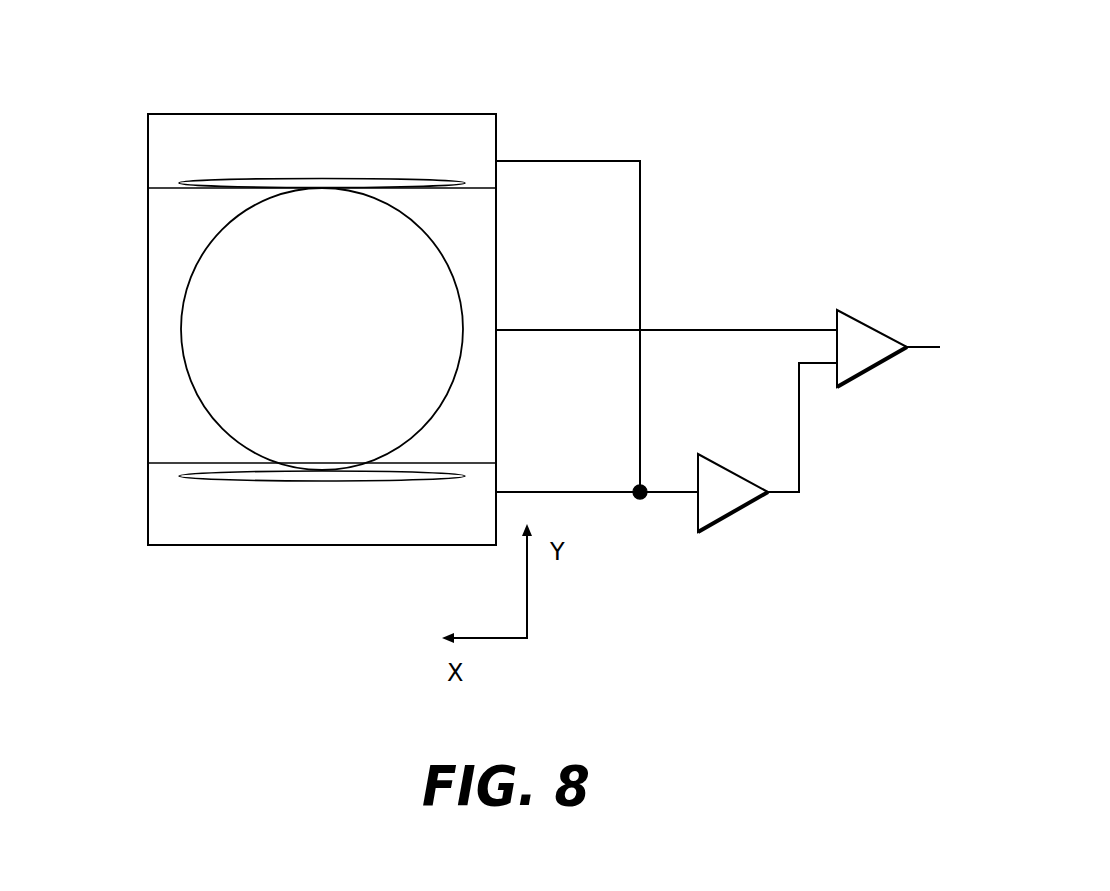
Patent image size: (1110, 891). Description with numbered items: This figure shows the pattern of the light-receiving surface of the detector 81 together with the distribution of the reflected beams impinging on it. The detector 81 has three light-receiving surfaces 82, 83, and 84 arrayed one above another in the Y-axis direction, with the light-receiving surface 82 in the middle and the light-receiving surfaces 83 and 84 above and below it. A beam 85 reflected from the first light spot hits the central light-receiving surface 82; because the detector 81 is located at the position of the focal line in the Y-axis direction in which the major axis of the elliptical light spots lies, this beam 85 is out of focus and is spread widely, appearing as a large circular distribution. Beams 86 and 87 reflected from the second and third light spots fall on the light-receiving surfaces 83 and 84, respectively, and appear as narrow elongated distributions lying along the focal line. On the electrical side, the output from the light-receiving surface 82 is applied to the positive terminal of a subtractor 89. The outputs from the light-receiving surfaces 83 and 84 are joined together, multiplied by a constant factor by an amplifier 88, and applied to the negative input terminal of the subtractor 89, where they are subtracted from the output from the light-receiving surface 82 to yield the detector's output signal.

The detector 81 is at (453, 114).
The light-receiving surface 82 is at (148, 268).
The light-receiving surface 83 is at (148, 140).
The light-receiving surface 84 is at (148, 510).
The beam 85 is at (183, 305).
The beam 86 is at (180, 183).
The beam 87 is at (195, 478).
The amplifier 88 is at (733, 516).
The subtractor 89 is at (862, 320).